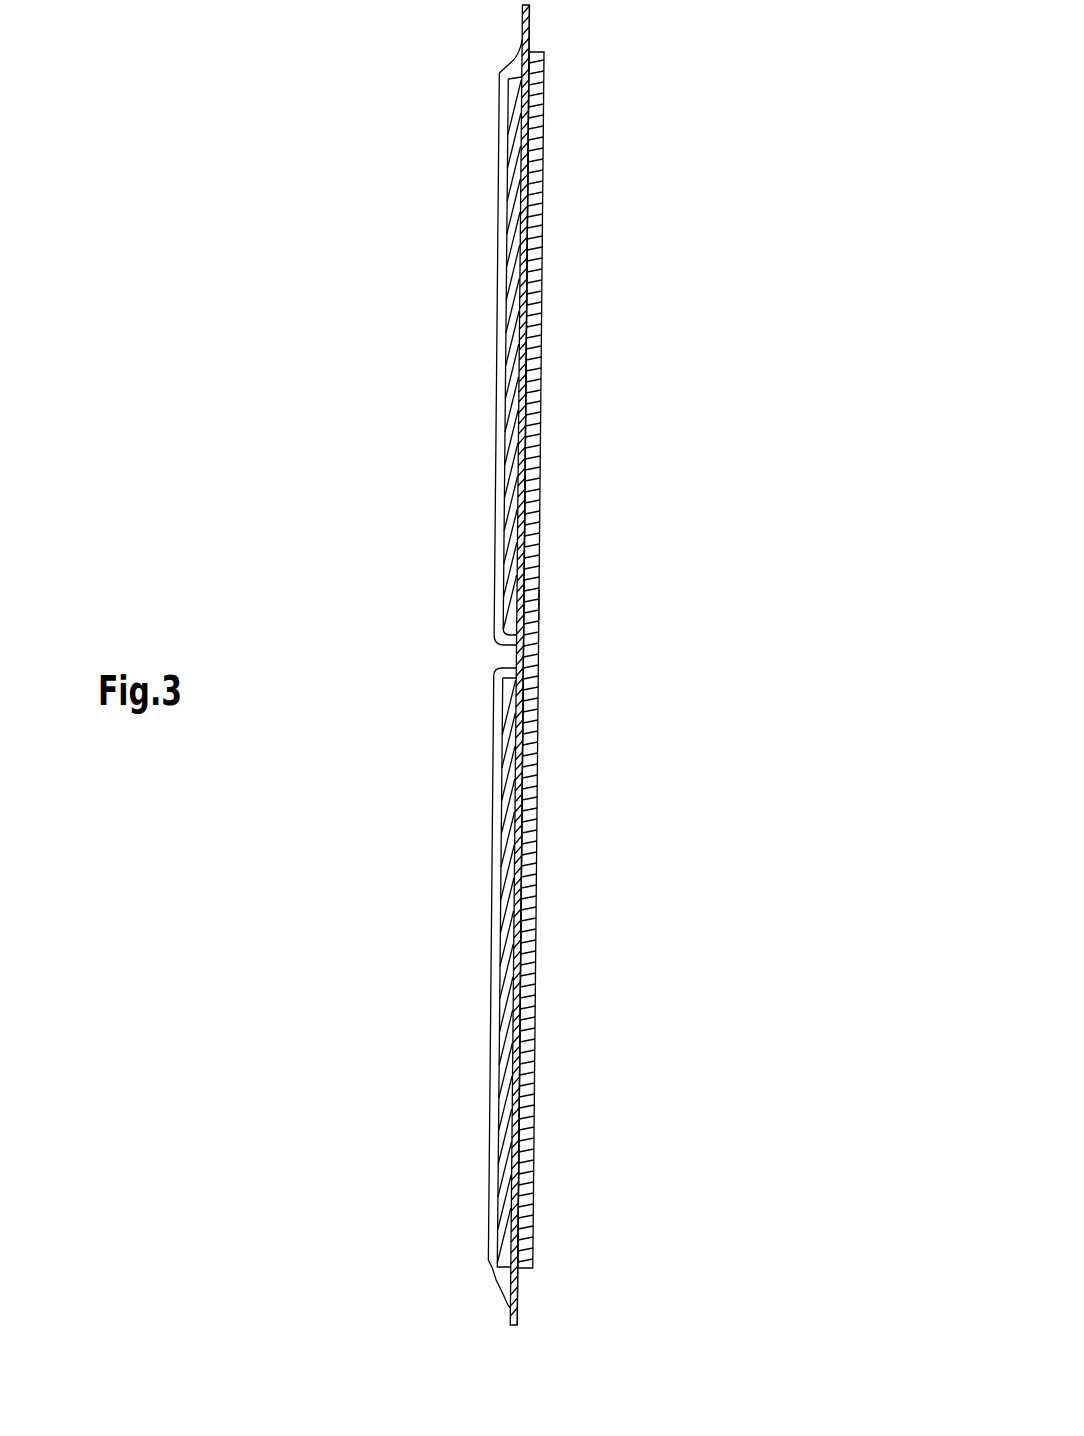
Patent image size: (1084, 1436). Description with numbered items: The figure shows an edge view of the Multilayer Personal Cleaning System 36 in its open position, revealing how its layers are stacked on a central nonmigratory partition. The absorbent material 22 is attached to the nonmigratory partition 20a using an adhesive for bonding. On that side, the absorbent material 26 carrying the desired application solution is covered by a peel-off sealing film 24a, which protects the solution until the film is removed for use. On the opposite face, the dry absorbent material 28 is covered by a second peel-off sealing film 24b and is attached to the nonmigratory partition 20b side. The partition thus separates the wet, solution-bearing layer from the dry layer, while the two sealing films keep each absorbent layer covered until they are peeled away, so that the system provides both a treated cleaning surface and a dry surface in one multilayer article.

The nonmigratory partition 20a is at (529, 25).
The nonmigratory partition side 20b is at (522, 33).
The absorbent material 22 is at (535, 903).
The peel-off sealing film 24a is at (496, 403).
The peel-off sealing film 24b is at (496, 1148).
The absorbent material with application solution 26 is at (513, 177).
The dry absorbent material 28 is at (510, 872).
The Multilayer Personal Cleaning System 36 is at (538, 603).